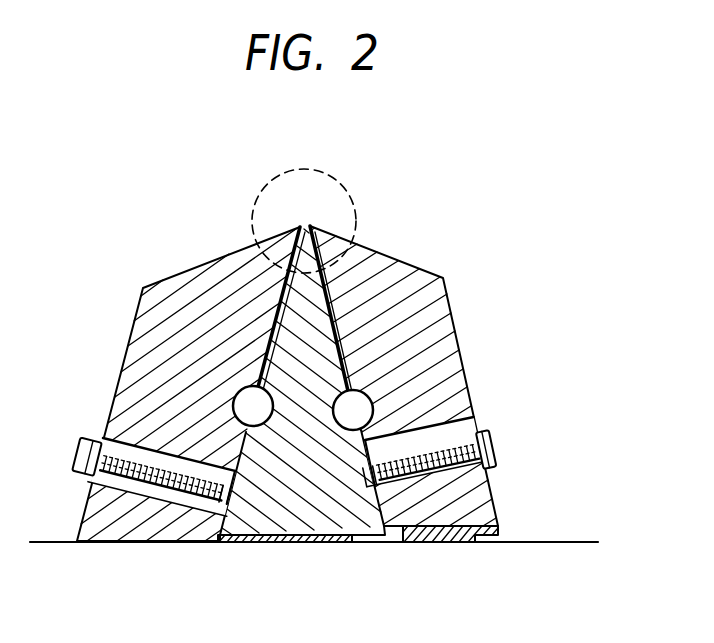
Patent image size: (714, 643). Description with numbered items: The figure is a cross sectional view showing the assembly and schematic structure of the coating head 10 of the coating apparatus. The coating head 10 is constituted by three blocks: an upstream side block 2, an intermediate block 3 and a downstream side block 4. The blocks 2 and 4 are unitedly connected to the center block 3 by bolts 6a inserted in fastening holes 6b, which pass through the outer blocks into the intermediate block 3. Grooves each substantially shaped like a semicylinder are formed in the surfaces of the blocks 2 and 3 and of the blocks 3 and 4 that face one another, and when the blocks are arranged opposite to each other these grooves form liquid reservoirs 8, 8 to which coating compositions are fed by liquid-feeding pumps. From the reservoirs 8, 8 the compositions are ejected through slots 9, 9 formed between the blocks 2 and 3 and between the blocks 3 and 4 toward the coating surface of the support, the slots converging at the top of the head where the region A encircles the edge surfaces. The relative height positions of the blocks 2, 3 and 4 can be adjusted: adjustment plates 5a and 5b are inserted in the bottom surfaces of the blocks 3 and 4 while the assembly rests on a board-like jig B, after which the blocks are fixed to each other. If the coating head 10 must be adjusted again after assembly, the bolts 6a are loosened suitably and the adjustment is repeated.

The coating head 10 is at (300, 365).
The upstream side block 2 is at (217, 277).
The intermediate block 3 is at (355, 230).
The downstream side block 4 is at (447, 300).
The adjustment plate 5a is at (298, 543).
The adjustment plate 5b is at (442, 543).
The bolt 6a is at (92, 463).
The fastening hole 6b is at (122, 443).
The liquid reservoir 8 is at (240, 404).
The slot 9 is at (283, 231).
The apex region A is at (325, 170).
The board-like jig B is at (543, 541).